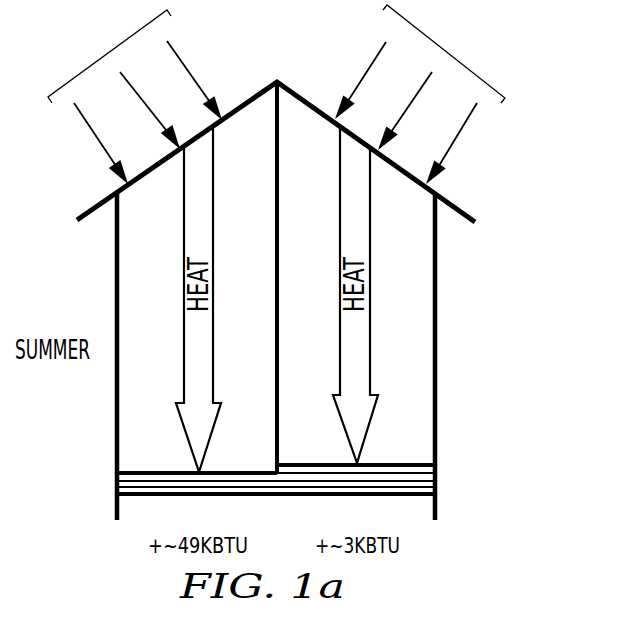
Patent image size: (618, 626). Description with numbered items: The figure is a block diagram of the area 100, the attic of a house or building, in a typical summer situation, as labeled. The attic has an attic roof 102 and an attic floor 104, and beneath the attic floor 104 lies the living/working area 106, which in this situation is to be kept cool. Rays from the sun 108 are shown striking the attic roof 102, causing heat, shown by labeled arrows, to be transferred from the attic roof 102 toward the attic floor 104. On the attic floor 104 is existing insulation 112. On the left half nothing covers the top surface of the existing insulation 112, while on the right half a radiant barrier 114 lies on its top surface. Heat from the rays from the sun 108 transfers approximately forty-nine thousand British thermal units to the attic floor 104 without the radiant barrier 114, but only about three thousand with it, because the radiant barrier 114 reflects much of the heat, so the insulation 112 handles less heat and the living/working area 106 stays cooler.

The area 100 is at (326, 271).
The attic roof 102 is at (452, 200).
The attic floor 104 is at (425, 489).
The living/working area 106 is at (406, 522).
The rays from the sun 108 is at (106, 51).
The existing insulation 112 is at (126, 480).
The radiant barrier 114 is at (428, 470).